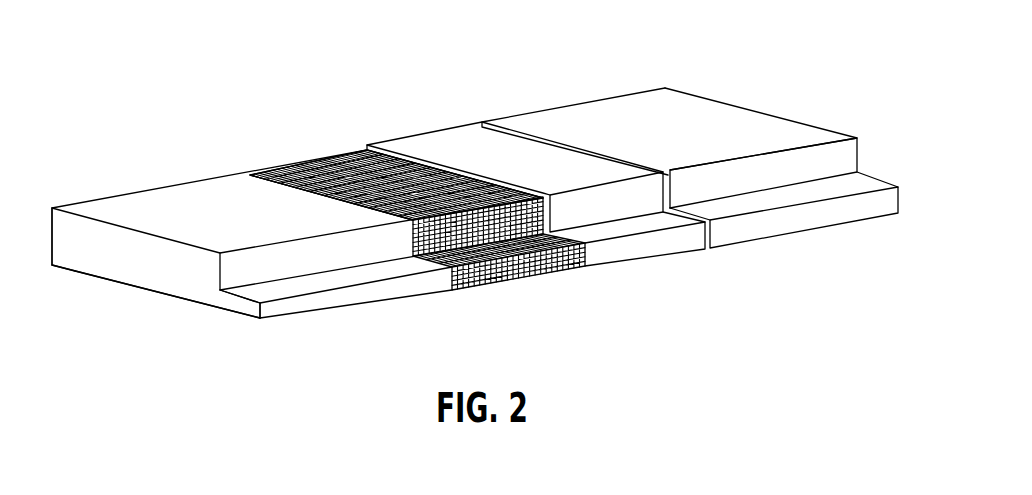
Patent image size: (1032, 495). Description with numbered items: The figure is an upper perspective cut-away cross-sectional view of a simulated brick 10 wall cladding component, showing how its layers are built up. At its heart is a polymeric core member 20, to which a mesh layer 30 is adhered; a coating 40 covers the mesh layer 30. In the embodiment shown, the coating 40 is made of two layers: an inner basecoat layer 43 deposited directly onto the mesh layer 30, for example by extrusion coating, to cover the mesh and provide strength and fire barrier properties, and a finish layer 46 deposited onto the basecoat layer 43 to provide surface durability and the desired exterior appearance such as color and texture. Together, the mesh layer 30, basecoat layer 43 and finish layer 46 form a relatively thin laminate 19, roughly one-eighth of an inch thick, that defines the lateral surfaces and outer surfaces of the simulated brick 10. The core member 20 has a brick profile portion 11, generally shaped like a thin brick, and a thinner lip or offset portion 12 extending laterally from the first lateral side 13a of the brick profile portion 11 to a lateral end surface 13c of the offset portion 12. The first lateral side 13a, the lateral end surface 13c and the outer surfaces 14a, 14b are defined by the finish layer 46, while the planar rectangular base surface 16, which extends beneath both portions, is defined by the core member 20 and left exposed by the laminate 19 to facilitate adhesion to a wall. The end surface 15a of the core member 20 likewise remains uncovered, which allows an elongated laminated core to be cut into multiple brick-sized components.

The simulated brick 10 is at (318, 62).
The brick profile portion 11 is at (68, 289).
The offset portion 12 is at (226, 317).
The first lateral side 13a is at (845, 158).
The lateral end surface 13c is at (788, 222).
The outer surface 14a is at (715, 115).
The outer surface 14b is at (862, 186).
The end surface 15a is at (150, 273).
The base surface 16 is at (185, 303).
The laminate 19 is at (898, 230).
The polymeric core member 20 is at (183, 218).
The mesh layer 30 is at (342, 175).
The coating 40 is at (475, 103).
The basecoat layer 43 is at (470, 155).
The finish layer 46 is at (620, 104).